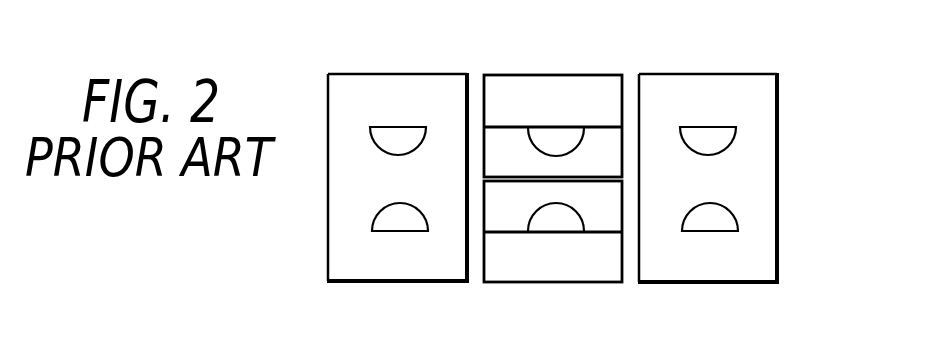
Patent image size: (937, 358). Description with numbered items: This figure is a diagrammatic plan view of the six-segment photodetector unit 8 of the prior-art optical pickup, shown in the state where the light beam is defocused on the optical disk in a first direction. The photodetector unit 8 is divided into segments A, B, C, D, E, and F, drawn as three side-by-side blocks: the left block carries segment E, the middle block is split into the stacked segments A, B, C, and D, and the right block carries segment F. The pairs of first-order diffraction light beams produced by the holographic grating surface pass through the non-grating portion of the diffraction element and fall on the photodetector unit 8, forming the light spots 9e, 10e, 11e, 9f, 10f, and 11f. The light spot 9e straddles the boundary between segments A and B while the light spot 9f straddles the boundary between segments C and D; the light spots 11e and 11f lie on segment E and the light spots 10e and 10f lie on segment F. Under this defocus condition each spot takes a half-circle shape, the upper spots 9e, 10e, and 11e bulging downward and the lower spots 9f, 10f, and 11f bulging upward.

The photodetector unit 8 is at (788, 171).
The light spot 9e is at (557, 126).
The light spot 9f is at (566, 233).
The light spot 10e is at (709, 126).
The light spot 10f is at (713, 232).
The light spot 11e is at (400, 126).
The light spot 11f is at (405, 232).